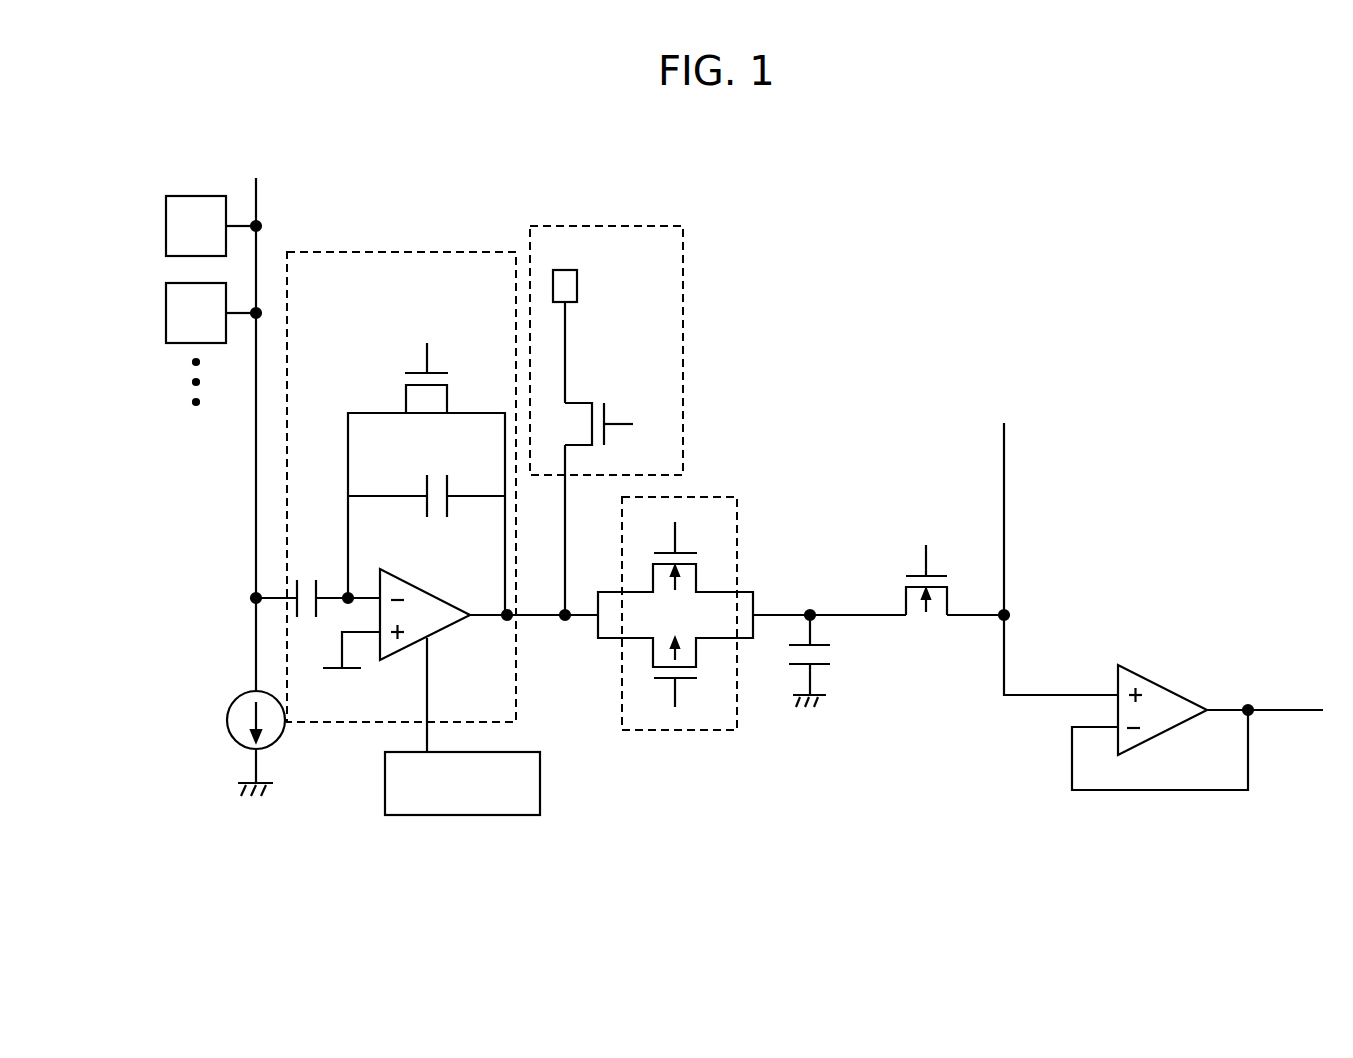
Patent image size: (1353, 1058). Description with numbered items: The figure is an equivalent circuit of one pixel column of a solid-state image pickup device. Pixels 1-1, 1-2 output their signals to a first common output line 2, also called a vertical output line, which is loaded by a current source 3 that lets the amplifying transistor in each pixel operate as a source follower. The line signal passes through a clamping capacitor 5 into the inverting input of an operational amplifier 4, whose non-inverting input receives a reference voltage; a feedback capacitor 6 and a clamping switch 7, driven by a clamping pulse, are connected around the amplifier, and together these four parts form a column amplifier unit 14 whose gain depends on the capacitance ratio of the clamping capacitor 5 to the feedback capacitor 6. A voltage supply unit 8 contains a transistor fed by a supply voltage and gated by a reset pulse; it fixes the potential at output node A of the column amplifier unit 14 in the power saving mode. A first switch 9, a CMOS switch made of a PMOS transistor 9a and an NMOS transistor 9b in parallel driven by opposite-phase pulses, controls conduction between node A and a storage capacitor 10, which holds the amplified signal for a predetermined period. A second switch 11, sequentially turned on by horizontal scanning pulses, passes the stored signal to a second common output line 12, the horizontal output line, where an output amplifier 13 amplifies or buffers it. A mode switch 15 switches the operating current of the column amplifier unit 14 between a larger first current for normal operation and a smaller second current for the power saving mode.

The pixel 1-1 is at (166, 216).
The pixel 1-2 is at (166, 303).
The first common output line 2 is at (256, 462).
The current source 3 is at (240, 708).
The operational amplifier 4 is at (425, 592).
The clamping capacitor 5 is at (310, 575).
The feedback capacitor 6 is at (437, 472).
The clamping switch 7 is at (440, 365).
The voltage supply unit 8 is at (628, 226).
The first switch 9 is at (685, 730).
The PMOS transistor 9a is at (688, 681).
The NMOS transistor 9b is at (690, 548).
The storage capacitor 10 is at (833, 655).
The second switch 11 is at (912, 568).
The second common output line 12 is at (1005, 468).
The output amplifier 13 is at (1170, 685).
The column amplifier unit 14 is at (410, 253).
The mode switch 15 is at (465, 815).